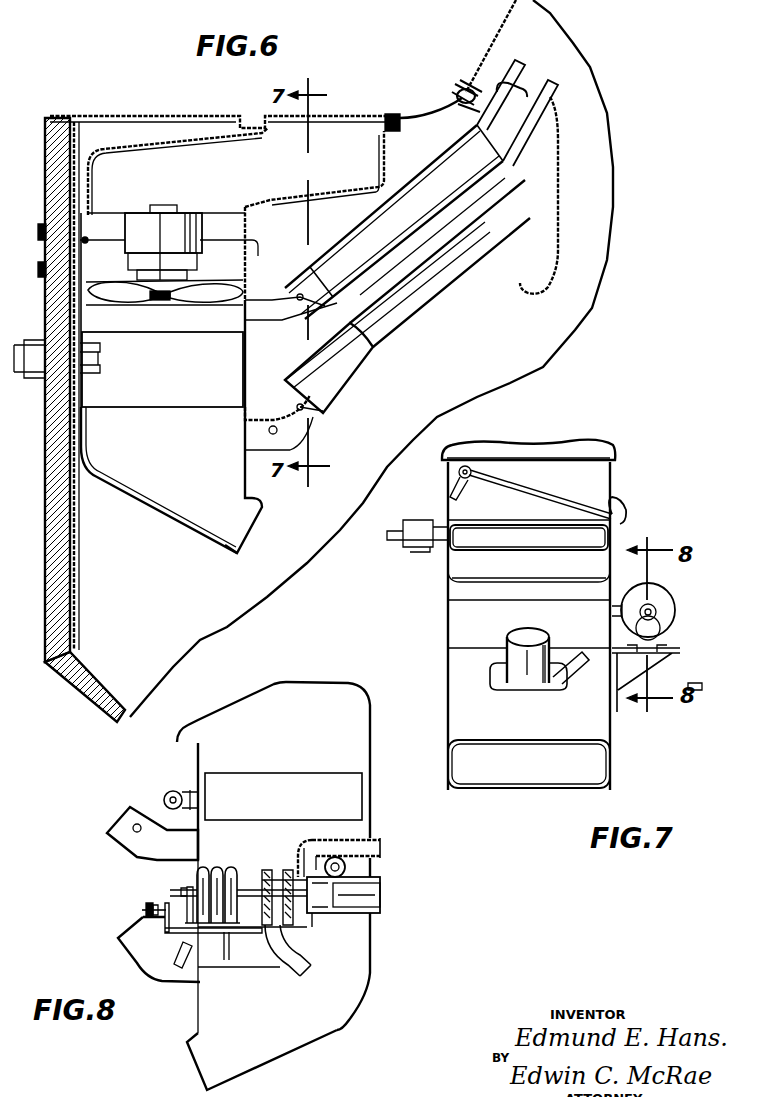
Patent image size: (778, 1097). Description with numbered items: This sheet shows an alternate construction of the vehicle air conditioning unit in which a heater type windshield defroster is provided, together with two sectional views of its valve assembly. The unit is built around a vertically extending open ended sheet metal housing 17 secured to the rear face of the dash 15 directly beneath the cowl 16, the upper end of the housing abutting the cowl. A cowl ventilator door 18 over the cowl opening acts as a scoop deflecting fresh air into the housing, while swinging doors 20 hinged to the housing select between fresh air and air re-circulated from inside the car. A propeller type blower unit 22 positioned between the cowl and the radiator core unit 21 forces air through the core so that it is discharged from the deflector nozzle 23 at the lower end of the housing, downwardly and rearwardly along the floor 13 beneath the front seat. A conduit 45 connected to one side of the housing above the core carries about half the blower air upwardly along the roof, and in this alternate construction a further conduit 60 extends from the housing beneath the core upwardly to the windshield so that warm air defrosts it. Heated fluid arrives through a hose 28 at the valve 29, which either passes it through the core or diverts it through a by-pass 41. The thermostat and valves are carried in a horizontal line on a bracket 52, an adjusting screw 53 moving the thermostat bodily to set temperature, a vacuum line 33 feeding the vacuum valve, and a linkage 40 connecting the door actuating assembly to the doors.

In FIG. 6, the floor 13 is at (90, 677).
In FIG. 6, the dash 15 is at (60, 560).
In FIG. 6, the cowl 16 is at (202, 116).
In FIG. 6, the housing 17 is at (202, 426).
In FIG. 7, the housing 17 is at (456, 671).
In FIG. 8, the housing 17 is at (360, 950).
In FIG. 6, the cowl ventilator door 18 is at (328, 116).
In FIG. 6, the swinging doors 20 is at (232, 270).
In FIG. 6, the radiator core unit 21 is at (162, 369).
In FIG. 6, the blower unit 22 is at (163, 242).
In FIG. 6, the deflector nozzle 23 is at (236, 551).
In FIG. 7, the deflector nozzle 23 is at (550, 784).
In FIG. 8, the deflector nozzle 23 is at (207, 1086).
In FIG. 8, the hose 28 is at (381, 893).
In FIG. 8, the valve 29 is at (316, 915).
In FIG. 8, the vacuum line 33 is at (299, 973).
In FIG. 7, the linkage 40 is at (519, 492).
In FIG. 8, the by-pass 41 is at (353, 845).
In FIG. 6, the conduit 45 is at (421, 189).
In FIG. 7, the conduit 45 is at (529, 537).
In FIG. 8, the conduit 45 is at (128, 809).
In FIG. 8, the bracket 52 is at (165, 933).
In FIG. 8, the adjusting screw 53 is at (144, 910).
In FIG. 6, the conduit 60 is at (407, 295).
In FIG. 7, the conduit 60 is at (525, 632).
In FIG. 8, the conduit 60 is at (143, 954).